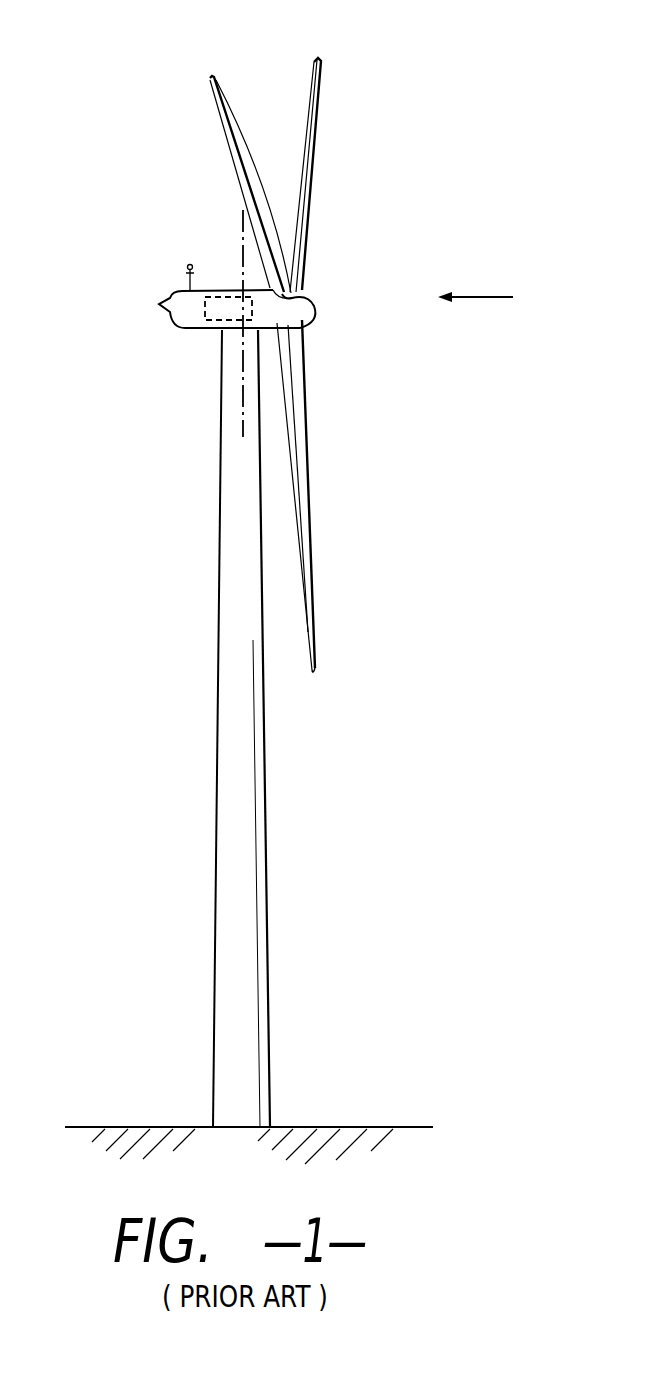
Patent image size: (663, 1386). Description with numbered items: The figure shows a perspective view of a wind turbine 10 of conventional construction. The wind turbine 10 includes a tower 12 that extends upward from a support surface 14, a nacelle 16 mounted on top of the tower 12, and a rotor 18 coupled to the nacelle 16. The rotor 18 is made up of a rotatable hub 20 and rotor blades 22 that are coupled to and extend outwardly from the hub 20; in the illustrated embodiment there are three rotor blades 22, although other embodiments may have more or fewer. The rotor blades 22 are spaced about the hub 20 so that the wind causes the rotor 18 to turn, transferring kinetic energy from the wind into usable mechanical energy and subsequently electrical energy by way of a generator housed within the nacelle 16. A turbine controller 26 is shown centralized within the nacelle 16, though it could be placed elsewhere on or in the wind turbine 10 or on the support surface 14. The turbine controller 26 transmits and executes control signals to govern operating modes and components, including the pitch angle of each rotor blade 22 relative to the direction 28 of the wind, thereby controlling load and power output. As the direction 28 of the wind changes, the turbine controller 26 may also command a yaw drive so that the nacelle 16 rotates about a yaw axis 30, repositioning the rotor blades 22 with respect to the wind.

The wind turbine 10 is at (410, 134).
The tower 12 is at (228, 838).
The support surface 14 is at (145, 1127).
The nacelle 16 is at (200, 333).
The rotor 18 is at (319, 291).
The rotatable hub 20 is at (314, 313).
The rotor blade 22 is at (312, 98).
The turbine controller 26 is at (232, 290).
The direction of the wind 28 is at (490, 297).
The yaw axis 30 is at (242, 232).